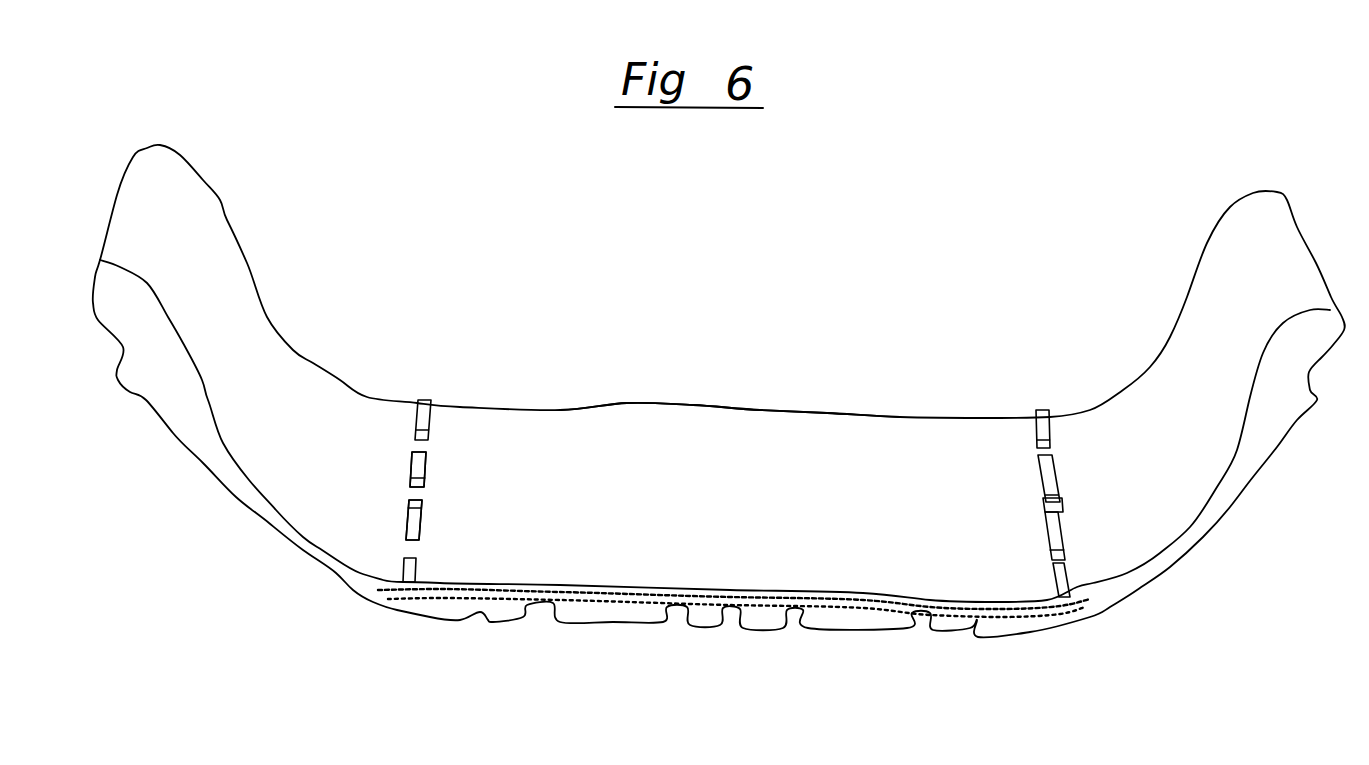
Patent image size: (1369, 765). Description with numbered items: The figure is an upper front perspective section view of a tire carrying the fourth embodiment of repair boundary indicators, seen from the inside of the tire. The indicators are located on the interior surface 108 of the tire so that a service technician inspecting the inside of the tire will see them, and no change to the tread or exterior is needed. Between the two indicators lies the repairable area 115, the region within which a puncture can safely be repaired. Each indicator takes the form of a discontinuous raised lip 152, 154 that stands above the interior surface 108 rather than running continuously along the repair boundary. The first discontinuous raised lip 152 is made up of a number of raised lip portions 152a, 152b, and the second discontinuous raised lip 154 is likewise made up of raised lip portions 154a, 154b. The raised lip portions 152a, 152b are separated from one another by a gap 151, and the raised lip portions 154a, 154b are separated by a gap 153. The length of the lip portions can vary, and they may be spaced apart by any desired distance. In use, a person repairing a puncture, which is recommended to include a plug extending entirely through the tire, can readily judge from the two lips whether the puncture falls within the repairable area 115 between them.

The interior surface 108 is at (896, 437).
The repairable area 115 is at (768, 437).
The gap 151 is at (406, 493).
The discontinuous raised lip 152 is at (456, 463).
The raised lip portion 152a is at (425, 473).
The raised lip portion 152b is at (422, 507).
The gap 153 is at (1062, 507).
The discontinuous raised lip 154 is at (1035, 472).
The raised lip portion 154a is at (1037, 482).
The raised lip portion 154b is at (1045, 527).